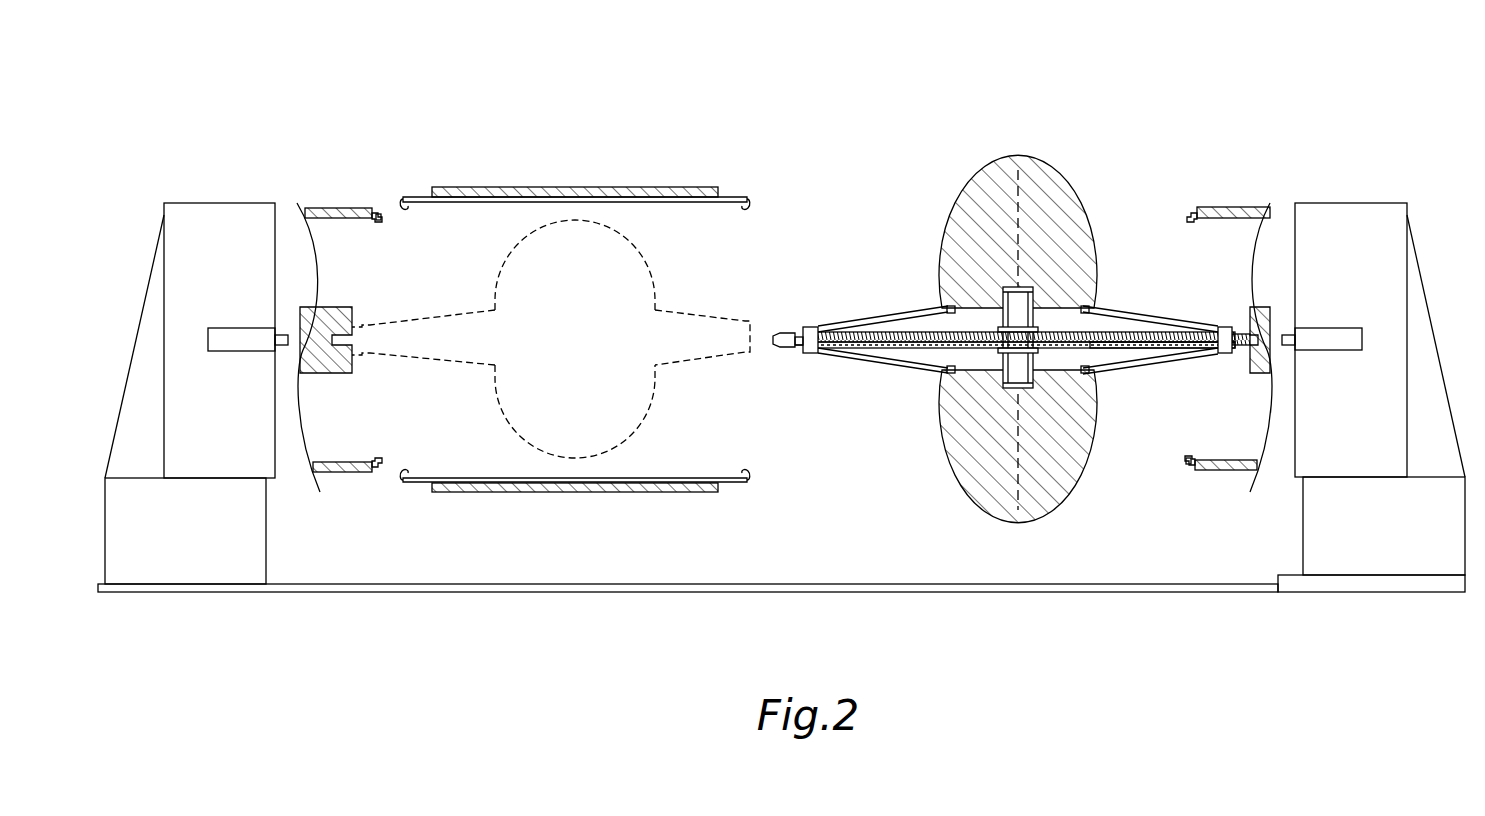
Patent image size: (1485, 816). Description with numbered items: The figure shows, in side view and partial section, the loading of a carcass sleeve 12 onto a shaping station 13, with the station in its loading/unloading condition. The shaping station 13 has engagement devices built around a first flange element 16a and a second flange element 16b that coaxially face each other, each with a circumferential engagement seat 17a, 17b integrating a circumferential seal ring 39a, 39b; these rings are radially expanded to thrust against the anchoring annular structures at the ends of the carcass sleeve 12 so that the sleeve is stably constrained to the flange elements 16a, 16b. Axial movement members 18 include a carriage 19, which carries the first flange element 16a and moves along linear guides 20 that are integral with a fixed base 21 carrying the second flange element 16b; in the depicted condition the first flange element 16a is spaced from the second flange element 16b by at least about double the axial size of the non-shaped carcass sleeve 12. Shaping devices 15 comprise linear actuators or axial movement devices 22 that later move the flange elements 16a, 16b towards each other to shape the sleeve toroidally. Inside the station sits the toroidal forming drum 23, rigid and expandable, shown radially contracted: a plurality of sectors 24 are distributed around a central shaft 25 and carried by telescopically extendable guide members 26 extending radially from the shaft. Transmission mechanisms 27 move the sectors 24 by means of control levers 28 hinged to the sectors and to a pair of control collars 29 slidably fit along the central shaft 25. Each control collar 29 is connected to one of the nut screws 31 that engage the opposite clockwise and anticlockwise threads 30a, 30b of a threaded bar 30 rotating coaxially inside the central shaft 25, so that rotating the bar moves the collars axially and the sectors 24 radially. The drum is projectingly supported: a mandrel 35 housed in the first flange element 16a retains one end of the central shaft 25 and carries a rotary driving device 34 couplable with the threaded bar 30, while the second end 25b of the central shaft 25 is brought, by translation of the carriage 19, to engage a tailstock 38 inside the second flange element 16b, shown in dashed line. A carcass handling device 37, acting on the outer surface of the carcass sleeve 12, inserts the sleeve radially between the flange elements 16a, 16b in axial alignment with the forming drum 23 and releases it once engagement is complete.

The carcass sleeve 12 is at (735, 197).
The shaping station 13 is at (551, 249).
The shaping devices 15 is at (780, 347).
The first flange element 16a is at (1235, 207).
The second flange element 16b is at (333, 208).
The circumferential engagement seat 17a is at (1191, 464).
The circumferential engagement seat 17b is at (379, 213).
The axial movement members 18 is at (1298, 528).
The carriage 19 is at (1368, 555).
The linear guides 20 is at (418, 592).
The fixed base 21 is at (195, 560).
The axial movement devices 22 is at (232, 328).
The toroidal forming drum 23 is at (971, 299).
The sectors 24 is at (990, 440).
The central shaft 25 is at (897, 332).
The second end 25b is at (785, 333).
The telescopically extendable guide members 26 is at (1008, 374).
The transmission mechanisms 27 is at (987, 344).
The control levers 28 is at (862, 319).
The control collar 29 is at (809, 327).
The threaded bar 30 is at (1002, 338).
The thread 30a is at (1130, 348).
The thread 30b is at (881, 348).
The nut screws 31 is at (797, 346).
The rotary driving device 34 is at (1246, 353).
The mandrel 35 is at (1245, 334).
The carcass handling device 37 is at (573, 187).
The tailstock 38 is at (352, 312).
The circumferential seal ring 39a is at (1189, 458).
The circumferential seal ring 39b is at (379, 219).